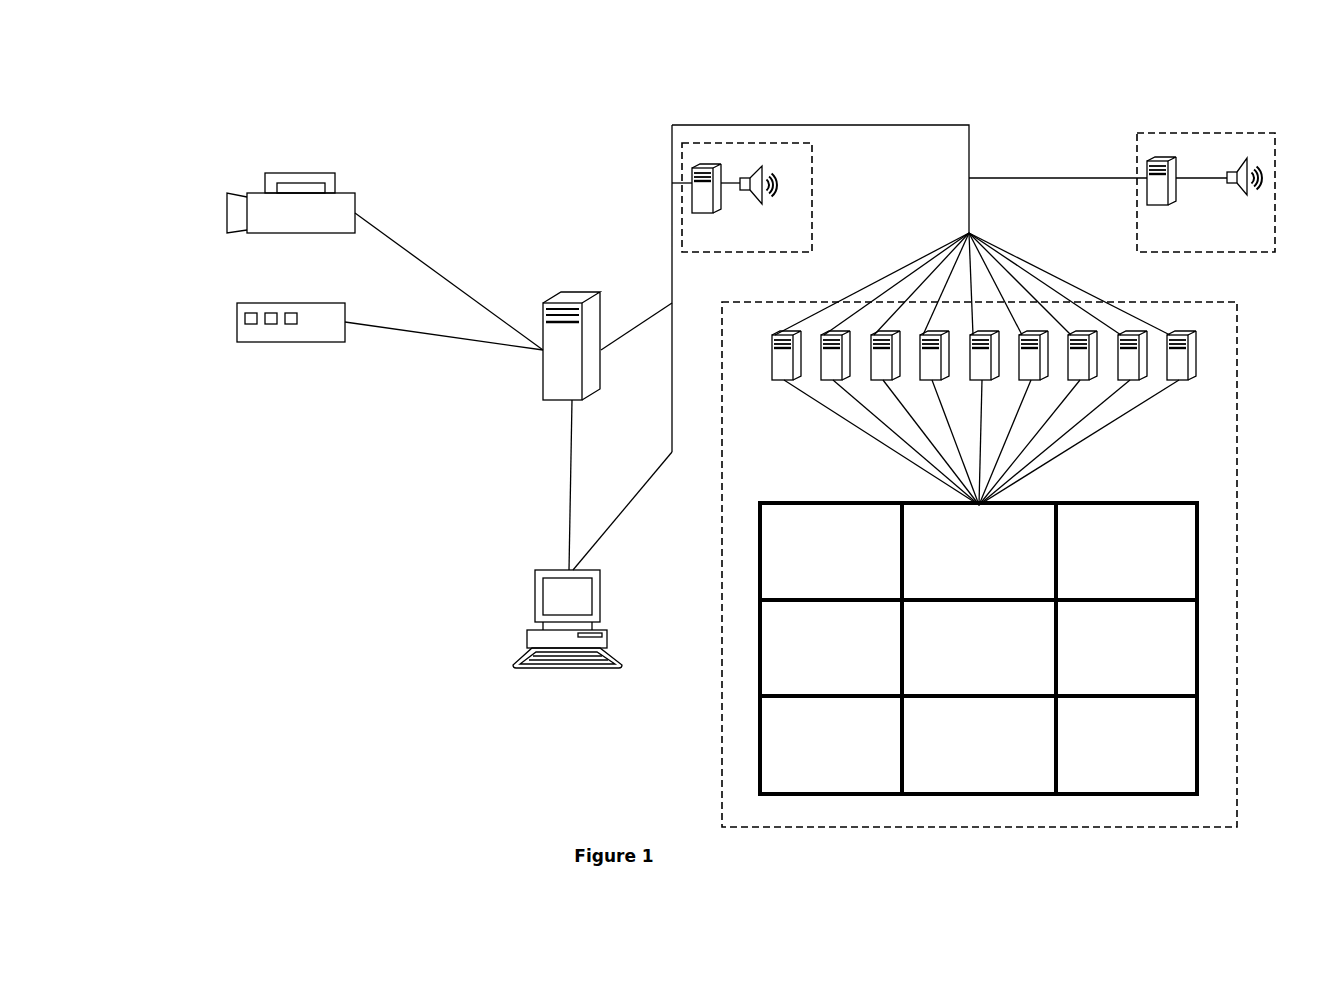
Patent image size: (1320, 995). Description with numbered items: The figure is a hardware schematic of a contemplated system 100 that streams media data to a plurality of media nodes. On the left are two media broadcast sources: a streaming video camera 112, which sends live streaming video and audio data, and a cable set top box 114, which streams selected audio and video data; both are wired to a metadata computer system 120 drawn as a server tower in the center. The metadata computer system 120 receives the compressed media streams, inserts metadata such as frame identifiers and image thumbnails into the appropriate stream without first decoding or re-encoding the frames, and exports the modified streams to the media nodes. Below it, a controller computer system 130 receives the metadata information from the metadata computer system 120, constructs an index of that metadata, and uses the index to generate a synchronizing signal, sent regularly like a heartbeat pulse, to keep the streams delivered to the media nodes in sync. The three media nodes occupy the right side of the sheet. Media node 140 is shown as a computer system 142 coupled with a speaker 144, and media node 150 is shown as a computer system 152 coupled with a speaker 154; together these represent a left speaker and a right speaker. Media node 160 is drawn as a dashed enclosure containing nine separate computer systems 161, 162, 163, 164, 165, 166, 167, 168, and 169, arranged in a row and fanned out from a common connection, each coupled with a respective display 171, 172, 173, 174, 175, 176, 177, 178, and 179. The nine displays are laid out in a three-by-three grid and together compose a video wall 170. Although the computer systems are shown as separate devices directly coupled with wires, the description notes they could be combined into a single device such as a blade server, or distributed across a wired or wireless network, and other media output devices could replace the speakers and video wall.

The system 100 is at (199, 93).
The media broadcast source 112 is at (385, 261).
The media broadcast source 114 is at (390, 333).
The metadata computer system 120 is at (598, 431).
The controller computer system 130 is at (592, 574).
The media node 140 is at (747, 212).
The computer system 142 is at (706, 205).
The speaker 144 is at (759, 195).
The media node 150 is at (1202, 207).
The computer system 152 is at (1187, 193).
The speaker 154 is at (1244, 190).
The media node 160 is at (979, 581).
The computer system 161 is at (866, 369).
The computer system 162 is at (890, 369).
The computer system 163 is at (915, 369).
The computer system 164 is at (940, 369).
The computer system 165 is at (975, 369).
The computer system 166 is at (1008, 369).
The computer system 167 is at (1033, 369).
The computer system 168 is at (1058, 369).
The computer system 169 is at (1082, 369).
The video wall 170 is at (964, 661).
The display 171 is at (831, 551).
The display 172 is at (979, 551).
The display 173 is at (1126, 551).
The display 174 is at (831, 648).
The display 175 is at (979, 648).
The display 176 is at (1126, 648).
The display 177 is at (831, 745).
The display 178 is at (979, 745).
The display 179 is at (1126, 745).